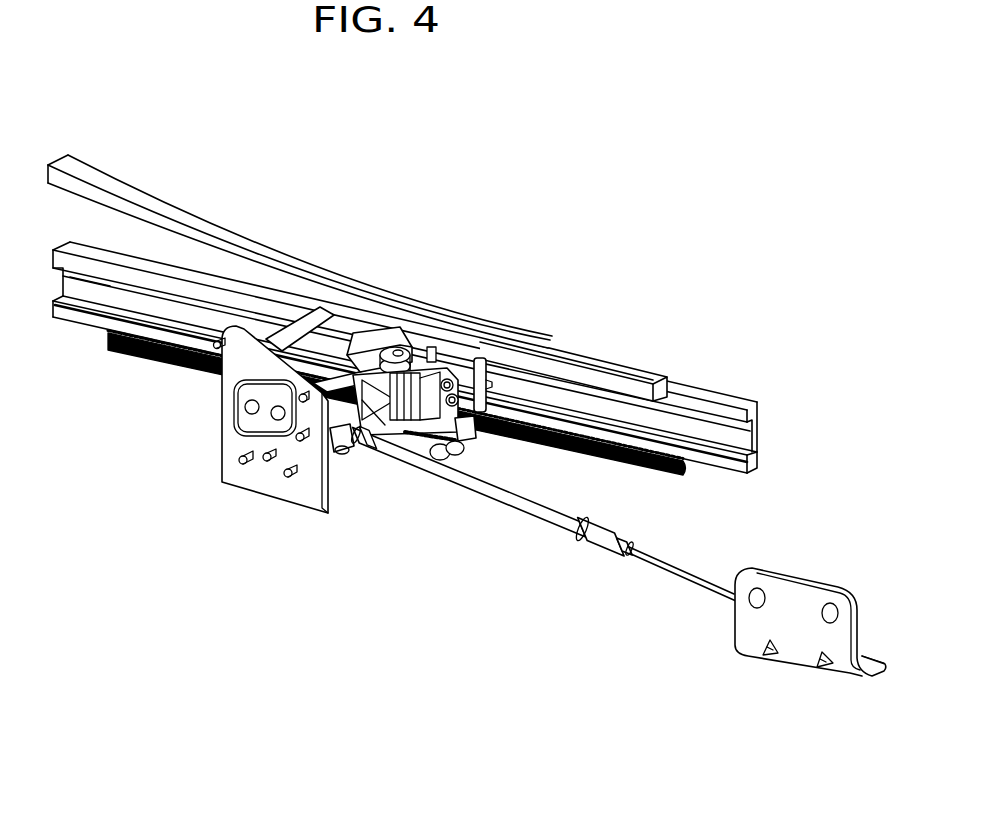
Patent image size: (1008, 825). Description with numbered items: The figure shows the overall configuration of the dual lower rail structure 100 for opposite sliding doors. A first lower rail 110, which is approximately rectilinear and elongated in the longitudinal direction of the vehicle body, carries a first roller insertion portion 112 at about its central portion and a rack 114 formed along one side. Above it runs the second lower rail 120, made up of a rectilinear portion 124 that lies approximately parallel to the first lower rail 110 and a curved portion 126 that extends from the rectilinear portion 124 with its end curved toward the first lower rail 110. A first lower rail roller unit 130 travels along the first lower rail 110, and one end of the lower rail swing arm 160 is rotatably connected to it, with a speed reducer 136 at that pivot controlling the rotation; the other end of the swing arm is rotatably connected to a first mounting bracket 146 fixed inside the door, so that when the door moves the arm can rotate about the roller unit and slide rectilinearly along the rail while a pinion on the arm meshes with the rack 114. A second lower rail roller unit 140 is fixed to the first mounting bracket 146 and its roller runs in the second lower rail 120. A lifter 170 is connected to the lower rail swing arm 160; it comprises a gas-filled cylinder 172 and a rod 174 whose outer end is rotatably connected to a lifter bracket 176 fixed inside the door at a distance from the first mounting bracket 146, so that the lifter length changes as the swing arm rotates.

The dual lower rail structure 100 is at (397, 297).
The first lower rail 110 is at (708, 406).
The first roller insertion portion 112 is at (87, 280).
The rack 114 is at (653, 474).
The second lower rail 120 is at (300, 214).
The rectilinear portion 124 is at (548, 364).
The curved portion 126 is at (218, 256).
The first lower rail roller unit 130 is at (414, 373).
The speed reducer 136 is at (461, 431).
The second lower rail roller unit 140 is at (290, 313).
The first mounting bracket 146 is at (262, 482).
The lower rail swing arm 160 is at (355, 456).
The lifter 170 is at (618, 580).
The cylinder 172 is at (447, 472).
The rod 174 is at (672, 578).
The lifter bracket 176 is at (795, 634).